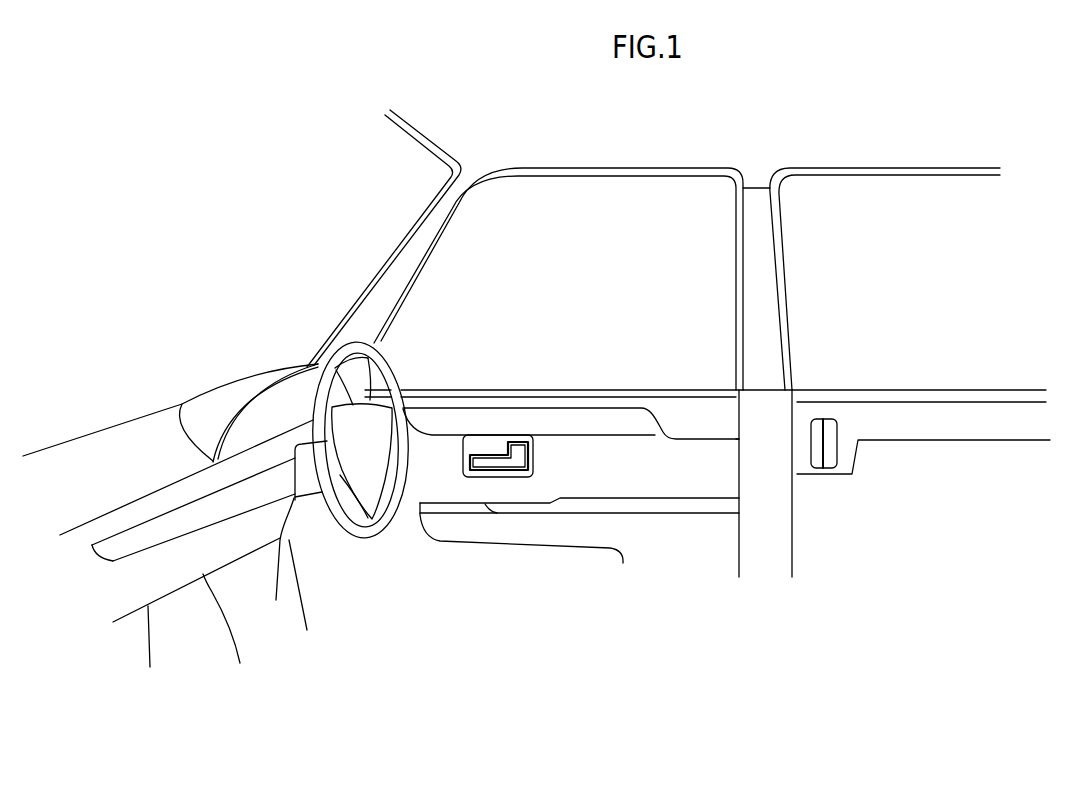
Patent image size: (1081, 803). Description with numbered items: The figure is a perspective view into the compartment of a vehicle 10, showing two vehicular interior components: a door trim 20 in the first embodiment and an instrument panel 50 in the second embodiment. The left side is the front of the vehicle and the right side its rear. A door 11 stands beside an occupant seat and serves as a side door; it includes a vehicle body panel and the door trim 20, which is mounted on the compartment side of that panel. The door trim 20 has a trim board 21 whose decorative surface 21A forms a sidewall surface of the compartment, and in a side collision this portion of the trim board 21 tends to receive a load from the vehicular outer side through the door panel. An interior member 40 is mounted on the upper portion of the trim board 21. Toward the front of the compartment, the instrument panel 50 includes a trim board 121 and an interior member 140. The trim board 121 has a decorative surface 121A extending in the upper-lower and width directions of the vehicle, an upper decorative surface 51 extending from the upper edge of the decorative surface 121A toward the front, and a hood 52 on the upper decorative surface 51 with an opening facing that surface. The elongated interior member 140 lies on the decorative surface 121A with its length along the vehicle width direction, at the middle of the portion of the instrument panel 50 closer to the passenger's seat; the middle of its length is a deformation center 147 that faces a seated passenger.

The vehicle 10 is at (852, 110).
The door 11 is at (657, 200).
The door trim 20 is at (554, 384).
The trim board 21 is at (571, 363).
The decorative surface 21A is at (600, 473).
The interior member 40 is at (496, 406).
The instrument panel 50 is at (175, 526).
The upper decorative surface 51 is at (97, 455).
The hood 52 is at (270, 378).
The trim board 121 is at (200, 643).
The decorative surface 121A is at (227, 540).
The interior member 140 is at (153, 527).
The deformation center 147 is at (222, 498).